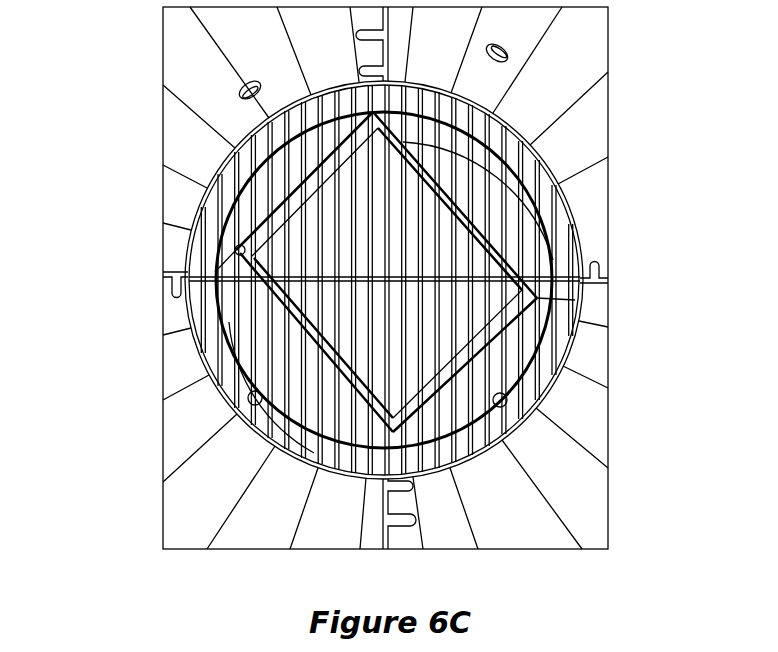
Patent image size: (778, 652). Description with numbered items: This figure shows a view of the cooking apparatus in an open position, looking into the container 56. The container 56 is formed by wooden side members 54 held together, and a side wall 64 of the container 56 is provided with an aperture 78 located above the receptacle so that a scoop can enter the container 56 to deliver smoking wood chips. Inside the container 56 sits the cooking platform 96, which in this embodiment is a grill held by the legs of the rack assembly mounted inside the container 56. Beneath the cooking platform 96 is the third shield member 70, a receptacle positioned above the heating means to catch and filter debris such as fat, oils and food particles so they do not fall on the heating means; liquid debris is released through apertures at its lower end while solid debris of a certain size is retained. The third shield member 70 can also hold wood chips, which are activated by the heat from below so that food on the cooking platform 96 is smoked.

The side member 54 is at (582, 421).
The container 56 is at (126, 350).
The side wall 64 is at (187, 421).
The third shield member 70 is at (315, 265).
The aperture 78 is at (237, 92).
The cooking platform 96 is at (226, 182).